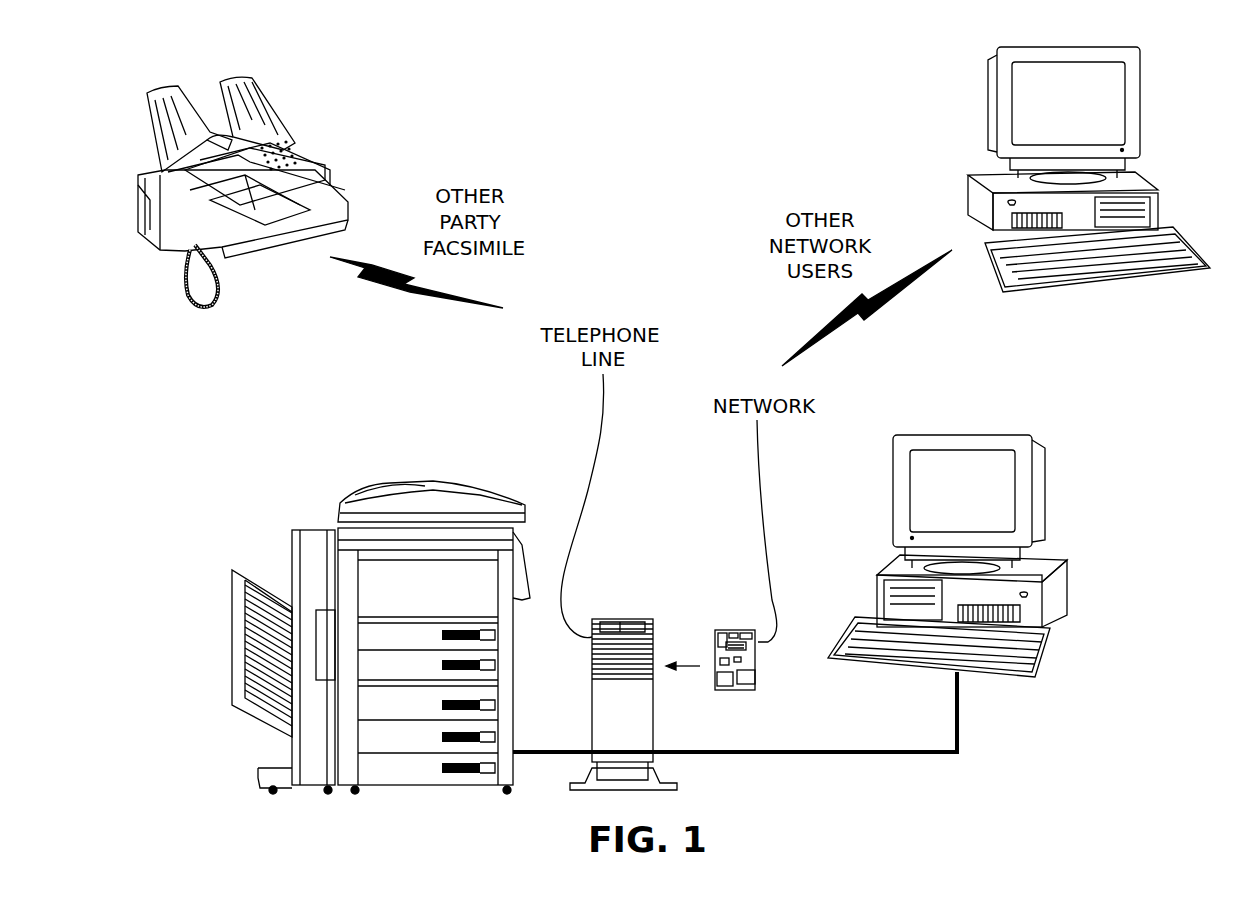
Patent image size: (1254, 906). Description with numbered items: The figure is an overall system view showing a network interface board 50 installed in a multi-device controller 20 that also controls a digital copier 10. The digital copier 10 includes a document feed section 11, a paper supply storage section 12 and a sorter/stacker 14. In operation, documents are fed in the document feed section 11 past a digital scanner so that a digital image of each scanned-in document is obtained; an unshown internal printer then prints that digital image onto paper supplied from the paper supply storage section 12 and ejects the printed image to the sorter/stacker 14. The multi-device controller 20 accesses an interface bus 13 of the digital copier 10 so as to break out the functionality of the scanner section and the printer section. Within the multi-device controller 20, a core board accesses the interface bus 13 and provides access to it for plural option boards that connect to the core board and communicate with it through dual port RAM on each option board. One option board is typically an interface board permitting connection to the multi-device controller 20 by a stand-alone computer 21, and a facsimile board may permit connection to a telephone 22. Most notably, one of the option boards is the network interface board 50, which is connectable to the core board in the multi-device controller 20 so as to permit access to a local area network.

The digital copier 10 is at (248, 506).
The document feed section 11 is at (372, 490).
The paper supply storage section 12 is at (380, 776).
The interface bus 13 is at (540, 757).
The sorter/stacker 14 is at (315, 772).
The multi-device controller 20 is at (665, 614).
The computer 21 is at (1043, 487).
The telephone 22 is at (598, 474).
The network interface board 50 is at (730, 690).